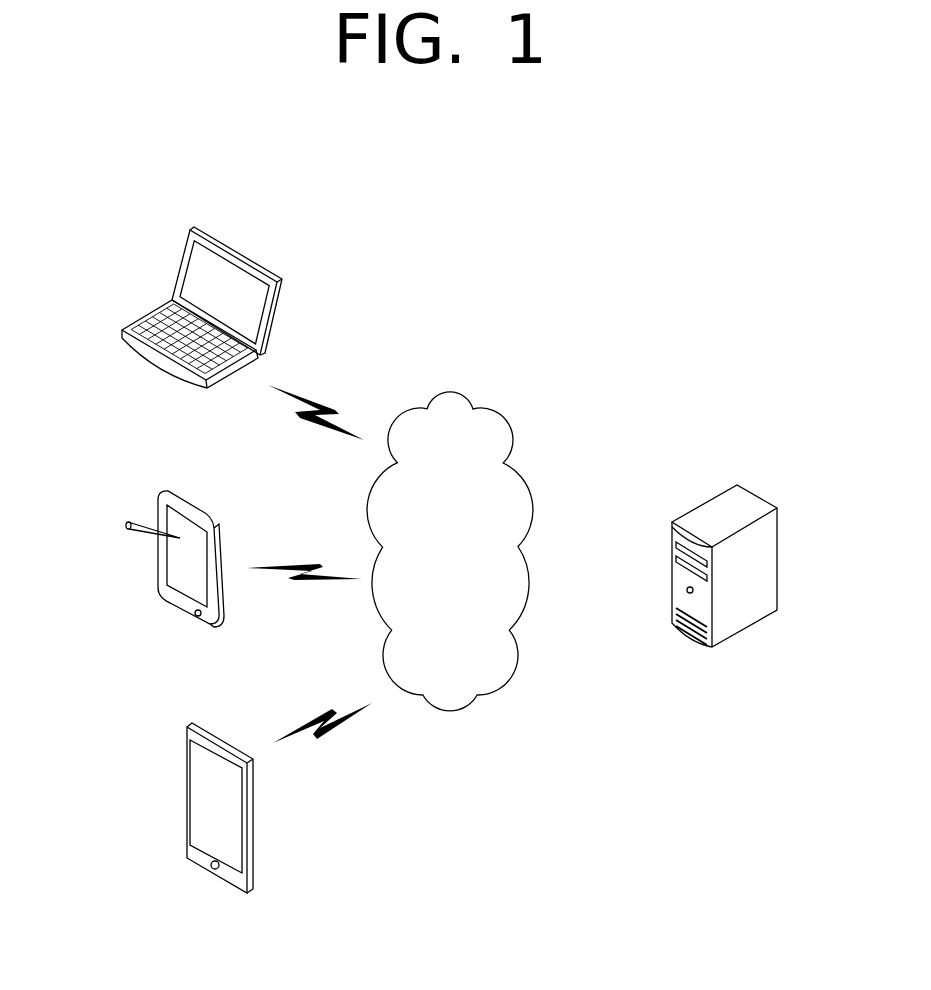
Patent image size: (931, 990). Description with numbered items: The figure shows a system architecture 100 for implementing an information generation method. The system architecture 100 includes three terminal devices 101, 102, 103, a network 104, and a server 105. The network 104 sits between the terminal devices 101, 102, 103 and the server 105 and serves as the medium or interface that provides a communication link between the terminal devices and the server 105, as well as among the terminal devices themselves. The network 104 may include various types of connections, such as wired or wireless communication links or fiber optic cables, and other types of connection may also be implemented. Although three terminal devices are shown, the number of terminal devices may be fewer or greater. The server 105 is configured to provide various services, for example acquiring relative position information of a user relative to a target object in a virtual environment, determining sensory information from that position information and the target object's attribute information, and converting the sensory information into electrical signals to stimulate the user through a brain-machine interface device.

The system architecture 100 is at (465, 171).
The terminal device 101 is at (188, 738).
The terminal device 102 is at (160, 503).
The terminal device 103 is at (183, 260).
The network 104 is at (450, 551).
The server 105 is at (742, 498).